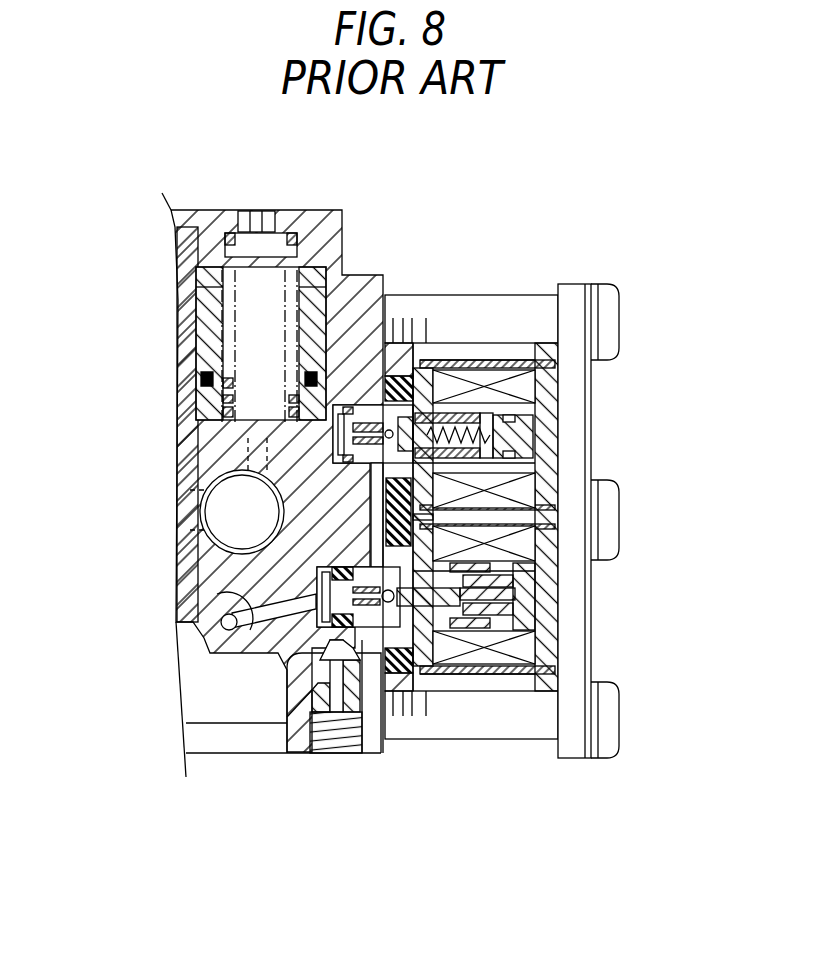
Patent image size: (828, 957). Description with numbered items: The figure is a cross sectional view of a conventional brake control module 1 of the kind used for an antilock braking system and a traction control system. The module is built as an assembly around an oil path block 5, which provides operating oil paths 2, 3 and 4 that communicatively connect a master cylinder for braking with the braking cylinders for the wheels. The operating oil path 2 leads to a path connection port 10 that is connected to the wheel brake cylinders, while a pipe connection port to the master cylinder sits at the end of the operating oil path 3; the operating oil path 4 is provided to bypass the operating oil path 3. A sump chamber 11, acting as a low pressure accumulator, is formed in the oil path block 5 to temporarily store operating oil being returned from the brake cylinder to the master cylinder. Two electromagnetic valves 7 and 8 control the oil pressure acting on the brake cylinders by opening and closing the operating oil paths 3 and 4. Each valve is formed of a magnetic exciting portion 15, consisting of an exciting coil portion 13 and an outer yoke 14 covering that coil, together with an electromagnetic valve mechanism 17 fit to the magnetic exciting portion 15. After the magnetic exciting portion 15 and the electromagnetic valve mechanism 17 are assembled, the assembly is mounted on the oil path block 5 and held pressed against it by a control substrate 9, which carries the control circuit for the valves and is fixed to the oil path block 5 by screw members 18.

The brake control module 1 is at (413, 285).
The operating oil path 2 is at (364, 683).
The operating oil path 3 is at (217, 594).
The operating oil path 4 is at (330, 432).
The oil path block 5 is at (263, 760).
The electromagnetic valve 7 is at (459, 668).
The electromagnetic valve 8 is at (470, 390).
The control substrate 9 is at (585, 603).
The path connection port 10 is at (331, 725).
The sump chamber 11 is at (197, 450).
The exciting coil portion 13 is at (512, 385).
The outer yoke 14 is at (547, 375).
The magnetic exciting portion 15 is at (508, 210).
The electromagnetic valve mechanism 17 is at (418, 385).
The screw member 18 is at (614, 318).